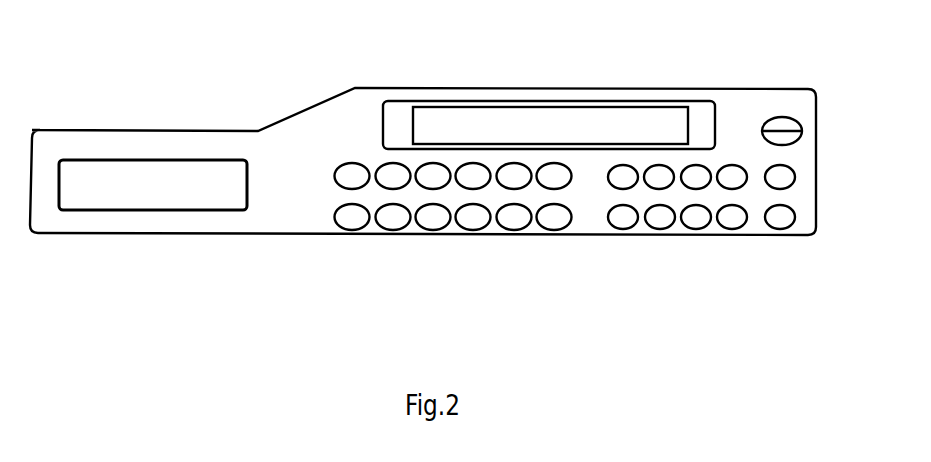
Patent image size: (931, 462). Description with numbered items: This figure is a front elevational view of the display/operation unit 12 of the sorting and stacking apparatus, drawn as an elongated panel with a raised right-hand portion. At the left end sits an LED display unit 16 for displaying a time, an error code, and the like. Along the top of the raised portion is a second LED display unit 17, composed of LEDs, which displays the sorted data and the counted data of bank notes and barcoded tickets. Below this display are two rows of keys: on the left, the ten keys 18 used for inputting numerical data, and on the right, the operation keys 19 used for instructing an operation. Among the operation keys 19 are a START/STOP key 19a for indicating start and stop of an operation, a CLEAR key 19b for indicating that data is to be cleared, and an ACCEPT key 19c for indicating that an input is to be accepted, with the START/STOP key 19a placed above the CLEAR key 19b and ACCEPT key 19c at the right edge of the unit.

The display/operation unit 12 is at (173, 117).
The LED display unit 16 is at (153, 201).
The LED display unit 17 is at (452, 101).
The ten keys 18 is at (572, 257).
The operation keys 19 is at (732, 176).
The START/STOP key 19a is at (768, 117).
The CLEAR key 19b is at (795, 173).
The ACCEPT key 19c is at (791, 259).